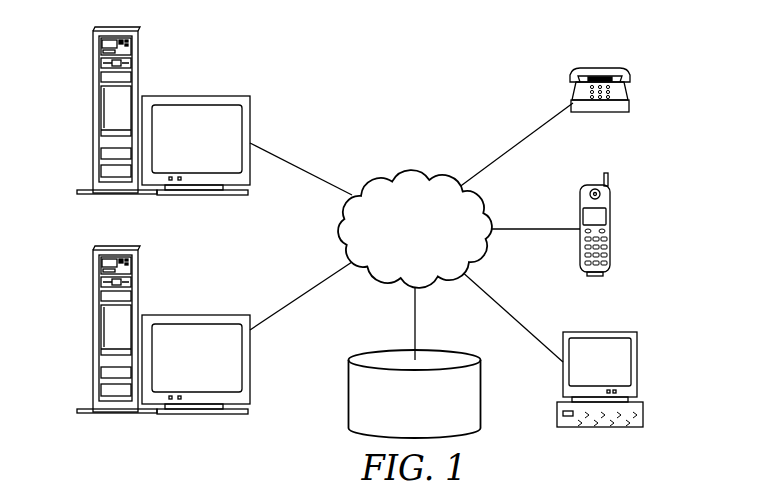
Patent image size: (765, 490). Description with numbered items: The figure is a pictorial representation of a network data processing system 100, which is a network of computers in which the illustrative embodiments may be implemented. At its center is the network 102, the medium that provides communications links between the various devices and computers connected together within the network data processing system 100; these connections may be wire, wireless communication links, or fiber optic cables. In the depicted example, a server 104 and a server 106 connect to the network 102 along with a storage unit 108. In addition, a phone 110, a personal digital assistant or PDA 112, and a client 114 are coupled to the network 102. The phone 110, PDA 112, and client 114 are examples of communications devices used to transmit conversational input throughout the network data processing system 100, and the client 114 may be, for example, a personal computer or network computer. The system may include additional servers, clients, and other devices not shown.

The network data processing system 100 is at (358, 71).
The network 102 is at (403, 177).
The server 104 is at (95, 112).
The server 106 is at (95, 331).
The storage unit 108 is at (347, 405).
The phone 110 is at (604, 67).
The PDA 112 is at (612, 218).
The client 114 is at (637, 363).